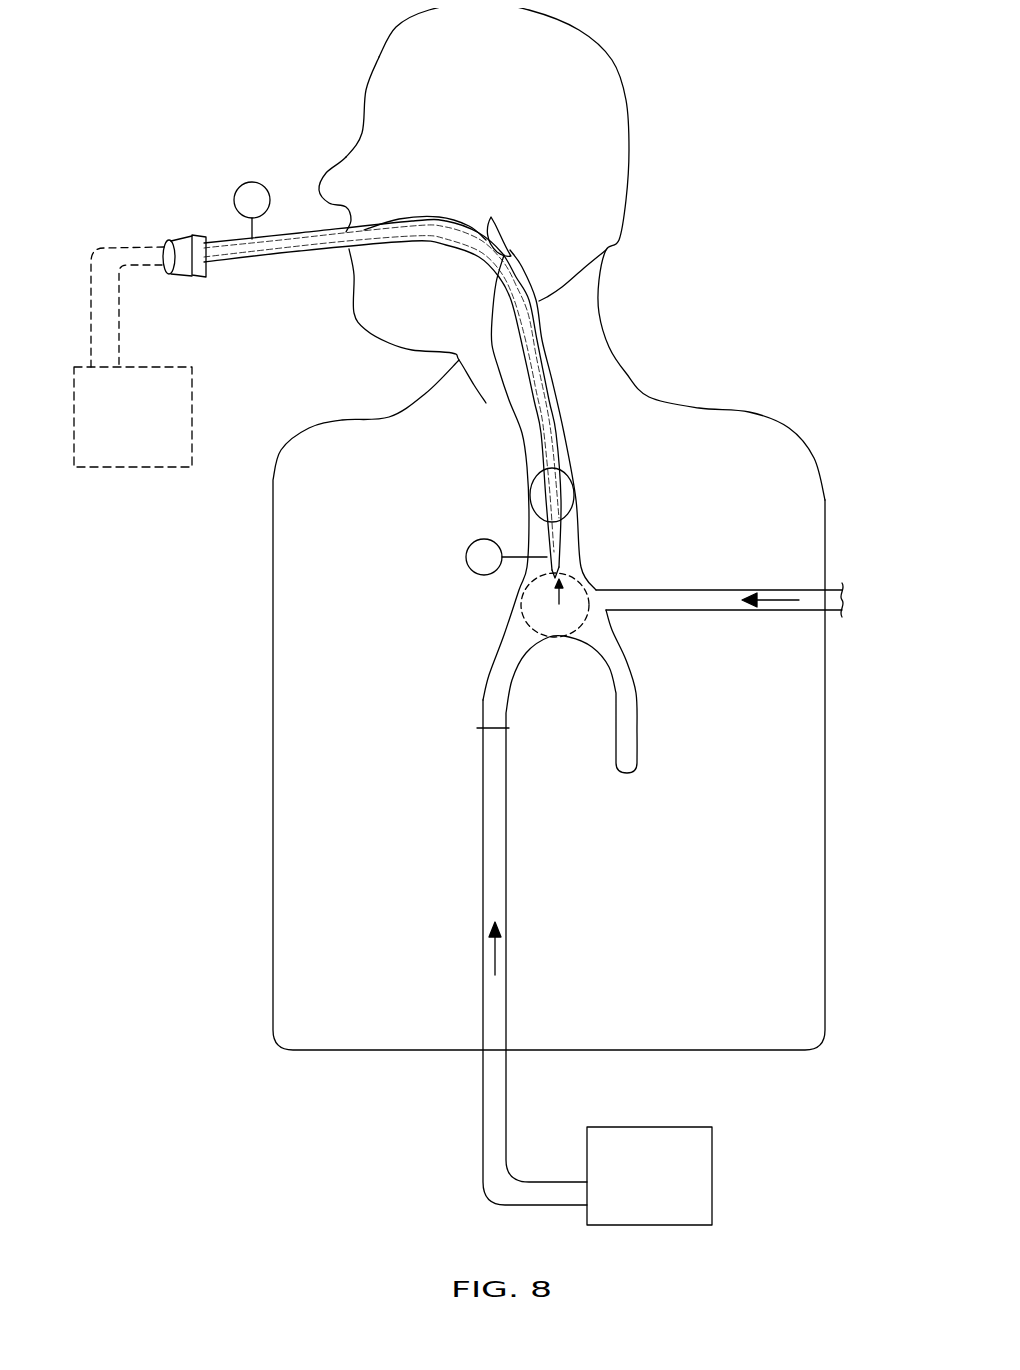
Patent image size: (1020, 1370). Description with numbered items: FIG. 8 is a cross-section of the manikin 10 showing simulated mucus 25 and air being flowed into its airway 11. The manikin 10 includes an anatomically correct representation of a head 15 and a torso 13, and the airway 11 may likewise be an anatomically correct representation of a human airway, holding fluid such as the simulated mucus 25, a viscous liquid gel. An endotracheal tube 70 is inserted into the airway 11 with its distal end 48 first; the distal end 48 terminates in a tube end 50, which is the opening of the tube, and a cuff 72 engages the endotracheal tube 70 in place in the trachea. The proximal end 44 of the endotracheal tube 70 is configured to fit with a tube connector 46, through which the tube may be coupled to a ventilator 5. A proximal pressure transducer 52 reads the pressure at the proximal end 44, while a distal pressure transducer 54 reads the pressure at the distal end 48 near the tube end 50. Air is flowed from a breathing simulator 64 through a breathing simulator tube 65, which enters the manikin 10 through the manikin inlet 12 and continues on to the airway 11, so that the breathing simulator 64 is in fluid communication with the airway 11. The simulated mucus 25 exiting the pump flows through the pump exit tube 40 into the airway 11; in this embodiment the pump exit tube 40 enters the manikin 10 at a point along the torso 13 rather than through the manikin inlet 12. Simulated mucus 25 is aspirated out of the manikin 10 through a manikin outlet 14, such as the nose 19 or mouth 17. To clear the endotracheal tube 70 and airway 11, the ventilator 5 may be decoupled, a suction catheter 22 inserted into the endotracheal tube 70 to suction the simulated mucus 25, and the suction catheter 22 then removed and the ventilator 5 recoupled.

The manikin 10 is at (211, 114).
The head 15 is at (380, 62).
The nose 19 is at (330, 203).
The suction catheter 22 is at (373, 220).
The airway 11 is at (395, 393).
The manikin outlet 14 is at (382, 399).
The mouth 17 is at (347, 249).
The endotracheal tube 70 is at (608, 248).
The torso 13 is at (373, 417).
The tube connector 46 is at (180, 240).
The proximal pressure transducer 52 is at (235, 197).
The proximal end 44 is at (253, 262).
The ventilator 5 is at (197, 413).
The distal end 48 is at (555, 510).
The cuff 72 is at (573, 480).
The distal pressure transducer 54 is at (467, 558).
The tube end 50 is at (577, 568).
The pump exit tube 40 is at (732, 590).
The simulated mucus 25 is at (570, 617).
The breathing simulator tube 65 is at (482, 1125).
The manikin inlet 12 is at (508, 1053).
The breathing simulator 64 is at (717, 1168).